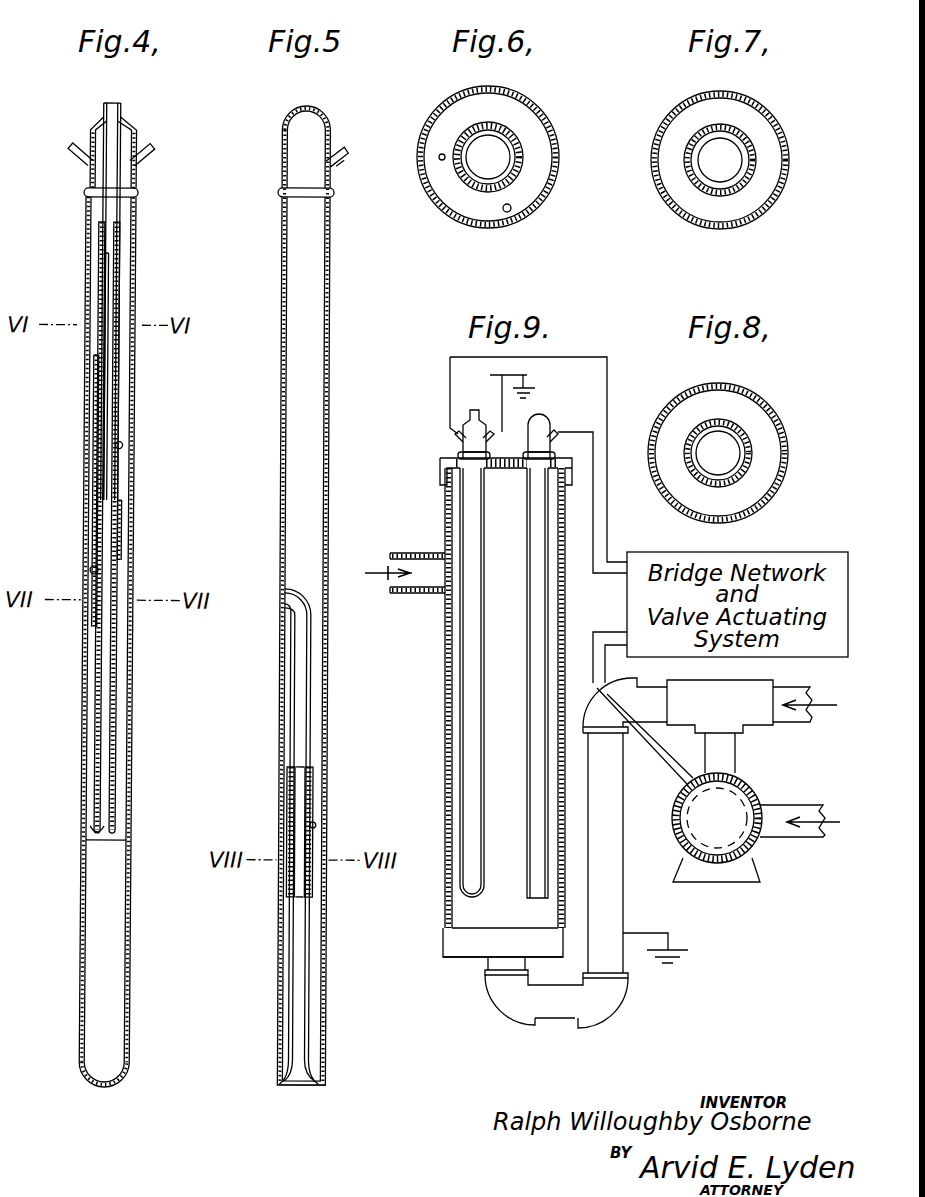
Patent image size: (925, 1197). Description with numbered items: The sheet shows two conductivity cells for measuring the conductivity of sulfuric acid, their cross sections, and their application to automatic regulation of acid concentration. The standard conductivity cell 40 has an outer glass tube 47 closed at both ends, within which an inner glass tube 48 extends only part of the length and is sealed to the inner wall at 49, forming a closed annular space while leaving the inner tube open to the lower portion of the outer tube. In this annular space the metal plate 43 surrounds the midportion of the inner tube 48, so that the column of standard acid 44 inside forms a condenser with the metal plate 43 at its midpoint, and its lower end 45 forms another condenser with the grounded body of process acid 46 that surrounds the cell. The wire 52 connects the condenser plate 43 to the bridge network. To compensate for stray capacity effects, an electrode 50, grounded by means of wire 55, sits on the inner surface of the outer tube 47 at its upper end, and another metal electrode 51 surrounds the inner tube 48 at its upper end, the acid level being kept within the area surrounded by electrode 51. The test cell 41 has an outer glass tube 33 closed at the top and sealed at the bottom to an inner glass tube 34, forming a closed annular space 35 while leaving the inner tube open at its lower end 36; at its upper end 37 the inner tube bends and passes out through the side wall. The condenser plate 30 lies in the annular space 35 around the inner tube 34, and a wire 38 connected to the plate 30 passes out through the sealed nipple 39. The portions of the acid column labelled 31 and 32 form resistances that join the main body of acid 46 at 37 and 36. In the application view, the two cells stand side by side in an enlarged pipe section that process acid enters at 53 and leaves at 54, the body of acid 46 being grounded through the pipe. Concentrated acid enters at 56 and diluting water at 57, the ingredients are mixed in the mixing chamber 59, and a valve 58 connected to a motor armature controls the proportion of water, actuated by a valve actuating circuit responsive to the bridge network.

In FIG. 5, the condenser plate 30 is at (291, 797).
In FIG. 8, the condenser plate 30 is at (733, 422).
In FIG. 5, the acid column resistance portion 31 is at (303, 745).
In FIG. 5, the acid column resistance portion 32 is at (300, 968).
In FIG. 5, the outer glass tube 33 is at (330, 302).
In FIG. 8, the outer glass tube 33 is at (735, 388).
In FIG. 5, the inner glass tube 34 is at (310, 1040).
In FIG. 8, the inner glass tube 34 is at (742, 447).
In FIG. 5, the closed annular space 35 is at (290, 977).
In FIG. 8, the closed annular space 35 is at (755, 473).
In FIG. 5, the lower end of inner tube 36 is at (300, 1082).
In FIG. 5, the upper end of inner tube 37 is at (283, 598).
In FIG. 5, the wire 38 is at (347, 153).
In FIG. 9, the wire 38 is at (558, 434).
In FIG. 5, the sealed nipple 39 is at (340, 170).
In FIG. 4, the standard conductivity cell 40 is at (97, 117).
In FIG. 9, the standard conductivity cell 40 is at (490, 425).
In FIG. 5, the conductivity cell 41 is at (306, 106).
In FIG. 9, the conductivity cell 41 is at (542, 412).
In FIG. 4, the metal plate 43 is at (97, 618).
In FIG. 7, the metal plate 43 is at (743, 187).
In FIG. 4, the column of standard acid 44 is at (105, 738).
In FIG. 4, the lower end of standard acid column 45 is at (115, 965).
In FIG. 9, the main body of acid 46 is at (506, 707).
In FIG. 4, the outer glass tube 47 is at (124, 517).
In FIG. 6, the outer glass tube 47 is at (462, 218).
In FIG. 7, the outer glass tube 47 is at (702, 227).
In FIG. 4, the inner glass tube 48 is at (117, 668).
In FIG. 6, the inner glass tube 48 is at (515, 163).
In FIG. 7, the inner glass tube 48 is at (745, 167).
In FIG. 4, the seal point 49 is at (85, 840).
In FIG. 4, the electrode 50 is at (125, 447).
In FIG. 6, the electrode 50 is at (509, 212).
In FIG. 4, the metal electrode 51 is at (118, 378).
In FIG. 6, the metal electrode 51 is at (512, 170).
In FIG. 4, the wire 52 is at (63, 148).
In FIG. 6, the wire 52 is at (442, 160).
In FIG. 9, the wire 52 is at (450, 437).
In FIG. 9, the inlet 53 is at (481, 945).
In FIG. 9, the outlet 54 is at (398, 582).
In FIG. 4, the wire 55 is at (157, 152).
In FIG. 9, the wire 55 is at (490, 375).
In FIG. 9, the concentrated acid inlet 56 is at (803, 687).
In FIG. 9, the water inlet 57 is at (805, 836).
In FIG. 9, the valve 58 is at (670, 822).
In FIG. 9, the mixing chamber 59 is at (762, 740).